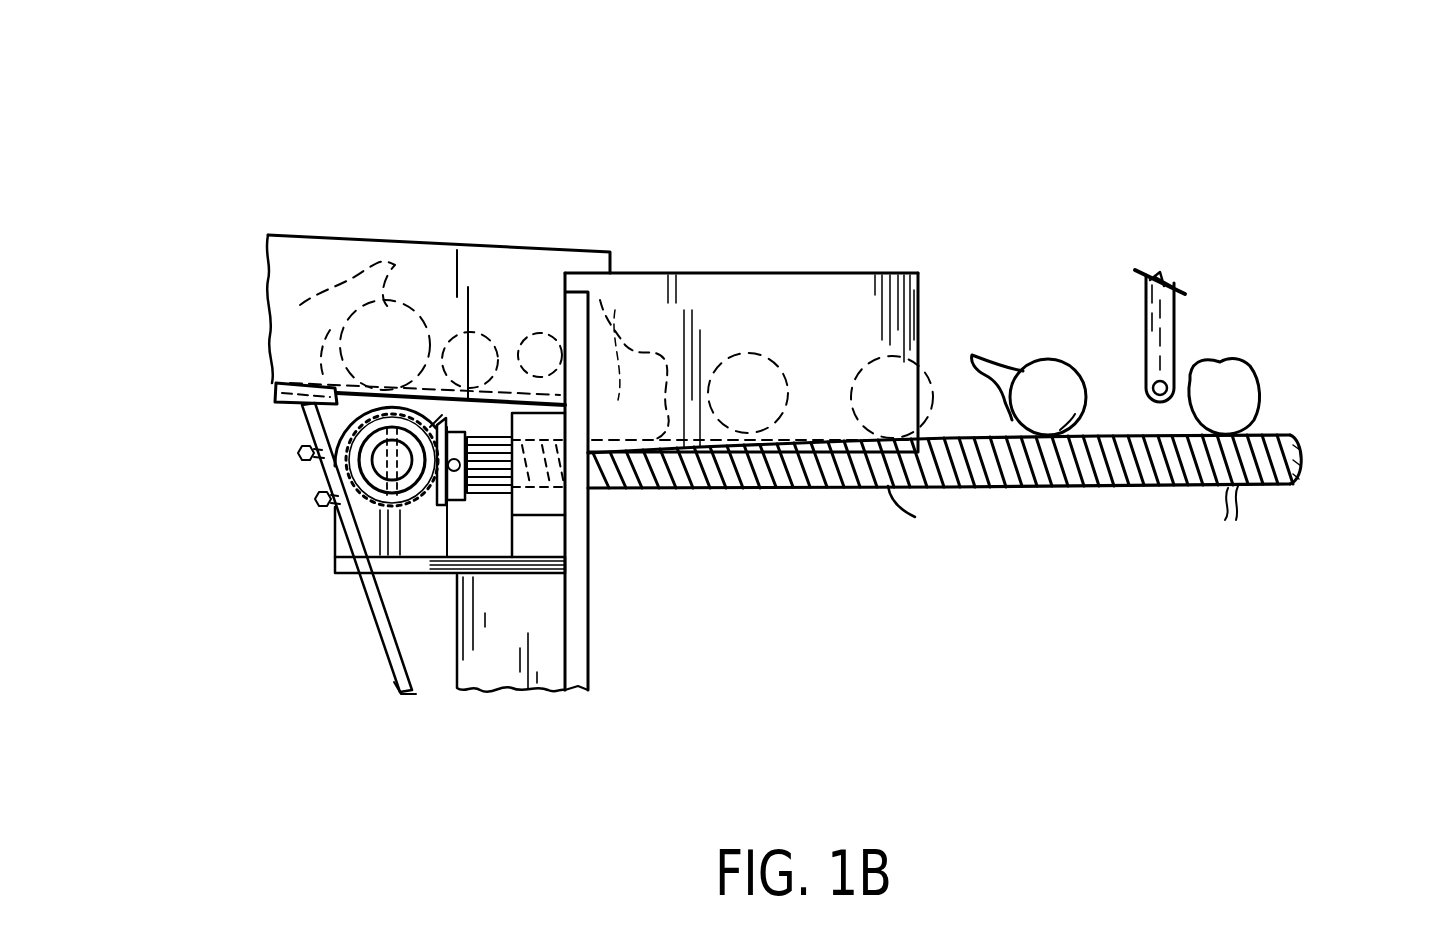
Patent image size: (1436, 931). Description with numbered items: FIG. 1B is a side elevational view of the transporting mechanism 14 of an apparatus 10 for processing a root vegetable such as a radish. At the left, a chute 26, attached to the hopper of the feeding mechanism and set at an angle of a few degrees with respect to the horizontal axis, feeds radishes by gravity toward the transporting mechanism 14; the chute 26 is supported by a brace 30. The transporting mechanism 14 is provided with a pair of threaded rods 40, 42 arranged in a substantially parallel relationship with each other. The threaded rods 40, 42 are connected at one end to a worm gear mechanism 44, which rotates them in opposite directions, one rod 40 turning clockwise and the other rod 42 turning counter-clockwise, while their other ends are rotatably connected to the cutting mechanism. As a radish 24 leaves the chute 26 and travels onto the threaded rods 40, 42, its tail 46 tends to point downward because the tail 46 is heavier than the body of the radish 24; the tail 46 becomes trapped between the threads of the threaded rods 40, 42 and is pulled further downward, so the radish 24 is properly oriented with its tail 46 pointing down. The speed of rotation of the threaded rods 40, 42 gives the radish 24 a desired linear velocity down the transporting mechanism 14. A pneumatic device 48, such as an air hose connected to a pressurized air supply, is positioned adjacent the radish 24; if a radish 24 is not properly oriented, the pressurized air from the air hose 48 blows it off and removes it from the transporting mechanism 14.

The apparatus 10 is at (272, 132).
The transporting mechanism 14 is at (1312, 224).
The radish 24 is at (1243, 375).
The chute 26 is at (318, 252).
The brace 30 is at (378, 634).
The threaded rod 40 is at (1115, 490).
The threaded rod 42 is at (1278, 432).
The worm gear mechanism 44 is at (402, 532).
The tail 46 is at (992, 372).
The pneumatic device 48 is at (1175, 333).